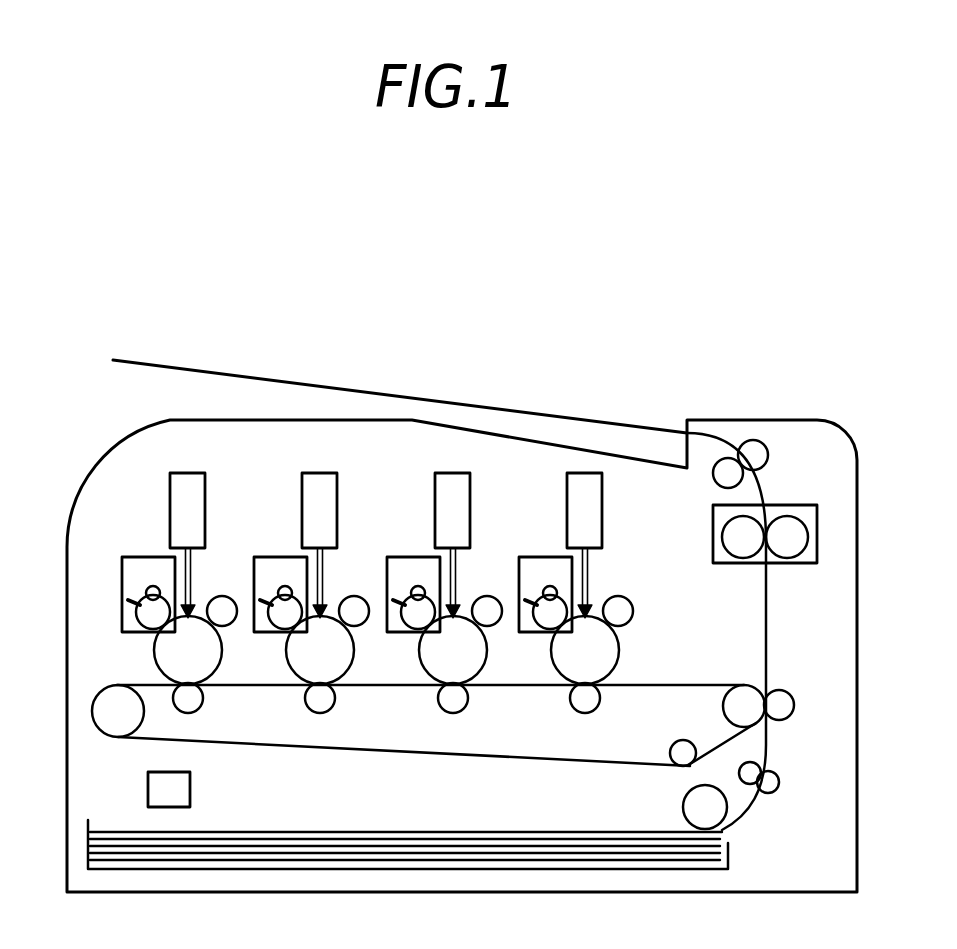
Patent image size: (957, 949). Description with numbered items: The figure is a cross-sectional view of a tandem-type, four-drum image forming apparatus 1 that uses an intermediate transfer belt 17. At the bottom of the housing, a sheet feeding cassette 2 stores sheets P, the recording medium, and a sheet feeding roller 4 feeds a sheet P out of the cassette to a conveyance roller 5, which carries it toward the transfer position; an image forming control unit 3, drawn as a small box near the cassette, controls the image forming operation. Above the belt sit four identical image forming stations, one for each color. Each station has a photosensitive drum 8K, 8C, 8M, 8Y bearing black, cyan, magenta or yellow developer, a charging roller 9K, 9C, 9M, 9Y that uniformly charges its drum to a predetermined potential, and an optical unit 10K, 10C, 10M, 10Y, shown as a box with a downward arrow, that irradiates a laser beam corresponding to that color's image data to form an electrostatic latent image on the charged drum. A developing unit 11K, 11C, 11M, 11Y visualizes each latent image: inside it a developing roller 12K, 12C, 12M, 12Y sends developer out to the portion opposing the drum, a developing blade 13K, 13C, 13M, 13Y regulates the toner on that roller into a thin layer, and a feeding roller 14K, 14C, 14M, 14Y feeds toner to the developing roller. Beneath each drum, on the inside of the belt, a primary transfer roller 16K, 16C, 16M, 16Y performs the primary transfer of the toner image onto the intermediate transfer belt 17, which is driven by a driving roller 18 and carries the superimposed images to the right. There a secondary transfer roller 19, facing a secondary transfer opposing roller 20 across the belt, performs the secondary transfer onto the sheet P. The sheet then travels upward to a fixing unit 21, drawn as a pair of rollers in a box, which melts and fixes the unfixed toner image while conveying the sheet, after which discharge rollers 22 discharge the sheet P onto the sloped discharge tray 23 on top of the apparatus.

The image forming apparatus 1 is at (112, 447).
The sheet feeding cassette 2 is at (730, 855).
The image forming control unit 3 is at (193, 786).
The sheet feeding roller 4 is at (700, 800).
The conveyance roller 5 is at (772, 775).
The photosensitive drum 8K is at (217, 663).
The photosensitive drum 8C is at (350, 663).
The photosensitive drum 8M is at (483, 663).
The photosensitive drum 8Y is at (610, 663).
The charging roller 9K is at (218, 612).
The charging roller 9C is at (350, 612).
The charging roller 9M is at (483, 612).
The charging roller 9Y is at (614, 612).
The optical unit 10K is at (181, 473).
The optical unit 10C is at (313, 473).
The optical unit 10M is at (445, 473).
The optical unit 10Y is at (566, 487).
The developing unit 11K is at (122, 560).
The developing unit 11C is at (254, 560).
The developing unit 11M is at (387, 560).
The developing unit 11Y is at (520, 560).
The developing roller 12K is at (142, 617).
The developing roller 12C is at (275, 617).
The developing roller 12M is at (408, 617).
The developing roller 12Y is at (540, 617).
The developing blade 13K is at (132, 605).
The developing blade 13C is at (265, 605).
The developing blade 13M is at (398, 605).
The developing blade 13Y is at (530, 605).
The feeding roller 14K is at (151, 587).
The feeding roller 14C is at (283, 587).
The feeding roller 14M is at (416, 587).
The feeding roller 14Y is at (549, 587).
The primary transfer roller 16K is at (190, 707).
The primary transfer roller 16C is at (322, 707).
The primary transfer roller 16M is at (455, 707).
The primary transfer roller 16Y is at (578, 708).
The intermediate transfer belt 17 is at (316, 752).
The driving roller 18 is at (118, 738).
The secondary transfer roller 19 is at (781, 700).
The secondary transfer opposing roller 20 is at (748, 690).
The fixing unit 21 is at (797, 565).
The discharge rollers 22 is at (770, 452).
The discharge tray 23 is at (492, 430).
The sheet P is at (448, 832).